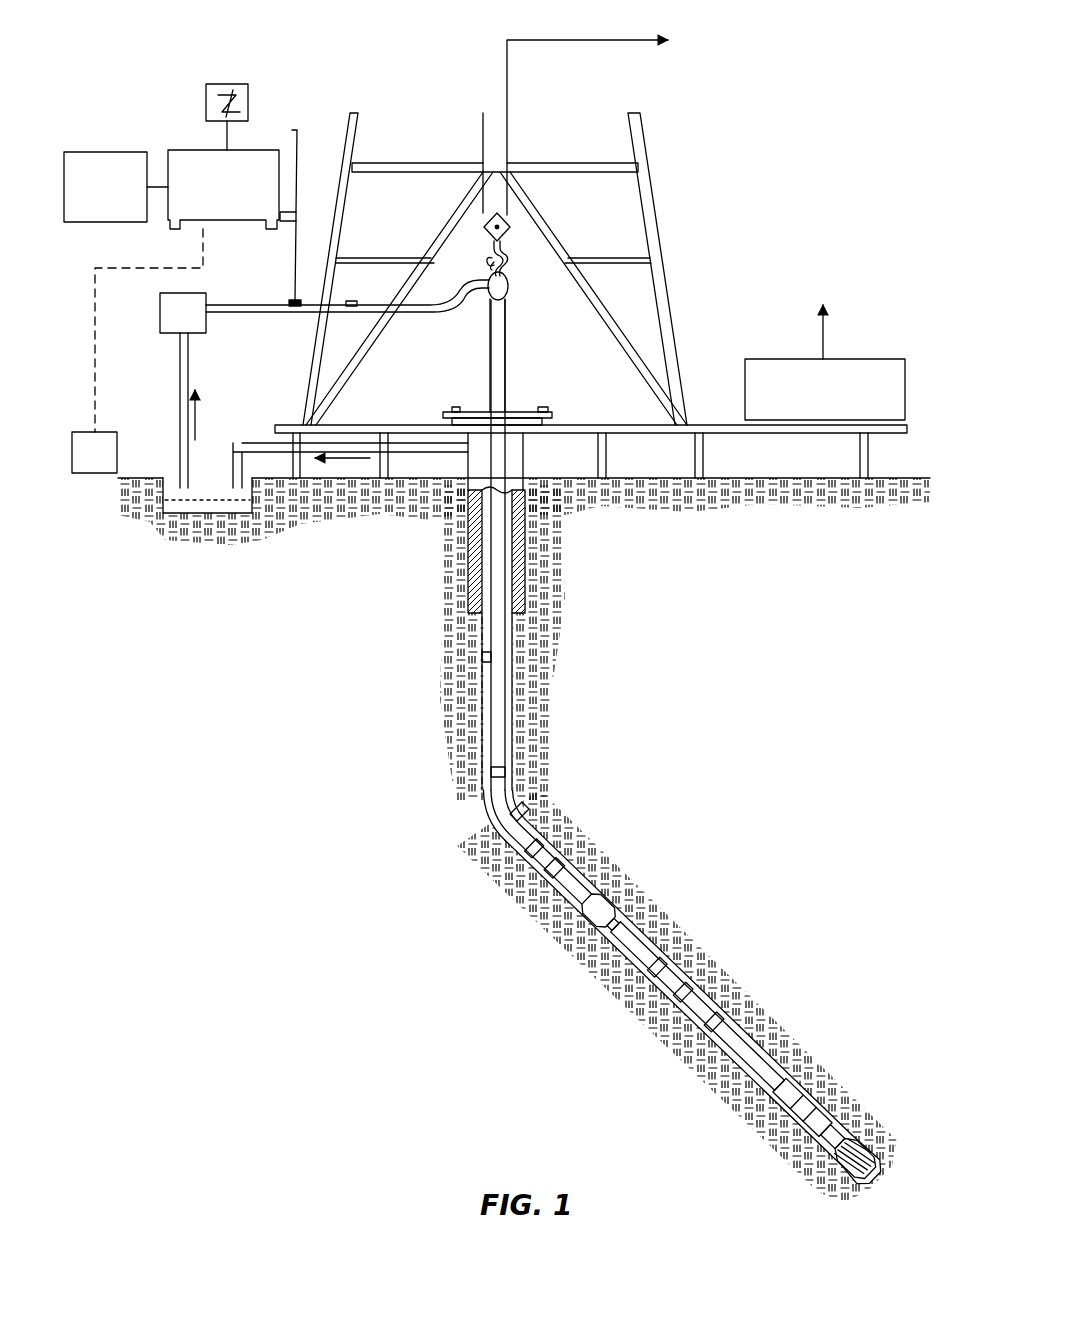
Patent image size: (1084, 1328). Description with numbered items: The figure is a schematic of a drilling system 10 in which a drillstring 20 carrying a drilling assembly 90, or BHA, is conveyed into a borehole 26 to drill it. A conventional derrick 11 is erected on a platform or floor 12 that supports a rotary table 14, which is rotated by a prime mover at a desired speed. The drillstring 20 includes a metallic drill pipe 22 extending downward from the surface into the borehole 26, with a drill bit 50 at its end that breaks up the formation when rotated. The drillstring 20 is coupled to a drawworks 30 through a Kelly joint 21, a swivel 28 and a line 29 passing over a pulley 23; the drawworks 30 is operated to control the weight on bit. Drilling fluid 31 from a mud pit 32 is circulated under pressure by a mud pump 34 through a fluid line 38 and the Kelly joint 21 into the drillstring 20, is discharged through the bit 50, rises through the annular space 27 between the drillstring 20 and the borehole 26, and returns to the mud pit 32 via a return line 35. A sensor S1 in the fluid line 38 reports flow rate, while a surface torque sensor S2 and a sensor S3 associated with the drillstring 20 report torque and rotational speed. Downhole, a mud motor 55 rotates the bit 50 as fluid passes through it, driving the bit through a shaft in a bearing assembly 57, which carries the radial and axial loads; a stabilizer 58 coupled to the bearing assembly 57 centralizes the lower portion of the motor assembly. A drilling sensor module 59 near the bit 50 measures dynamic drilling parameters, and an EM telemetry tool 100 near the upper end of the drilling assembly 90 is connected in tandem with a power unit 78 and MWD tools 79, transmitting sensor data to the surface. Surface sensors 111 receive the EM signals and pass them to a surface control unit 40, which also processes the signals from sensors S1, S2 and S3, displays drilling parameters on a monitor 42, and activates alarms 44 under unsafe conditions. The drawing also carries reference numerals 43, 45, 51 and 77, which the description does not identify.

The drilling system 10 is at (410, 62).
The derrick 11 is at (665, 268).
The platform or floor 12 is at (700, 425).
The rotary table 14 is at (518, 410).
The drillstring 20 is at (518, 707).
The Kelly joint 21 is at (506, 368).
The drill pipe 22 is at (480, 685).
The pulley 23 is at (503, 243).
The borehole 26 is at (520, 802).
The annular space 27 is at (536, 830).
The swivel 28 is at (488, 292).
The line 29 is at (508, 138).
The drawworks 30 is at (880, 358).
The drilling fluid 31 is at (172, 490).
The mud pit 32 is at (234, 512).
The mud pump 34 is at (160, 305).
The return line 35 is at (397, 452).
The fluid line 38 is at (180, 390).
The surface control unit 40 is at (190, 150).
The display/monitor 42 is at (233, 82).
The pressure sensor 43 is at (288, 300).
The alarms 44 is at (125, 222).
The sensor signal line 45 is at (309, 210).
The drill bit 50 is at (879, 1147).
The wellbore bottom 51 is at (850, 1188).
The mud motor 55 is at (711, 994).
The bearing assembly 57 is at (834, 1104).
The stabilizer 58 is at (840, 1112).
The drilling sensor module 59 is at (820, 1143).
The measurement while drilling tool 77 is at (583, 919).
The power unit 78 is at (511, 841).
The MWD tools 79 is at (525, 861).
The drilling assembly 90 is at (742, 883).
The EM telemetry tool 100 is at (493, 797).
The surface sensors 111 is at (103, 432).
The flow rate sensor S1 is at (360, 273).
The surface torque sensor S2 is at (560, 392).
The rotational speed sensor S3 is at (452, 406).